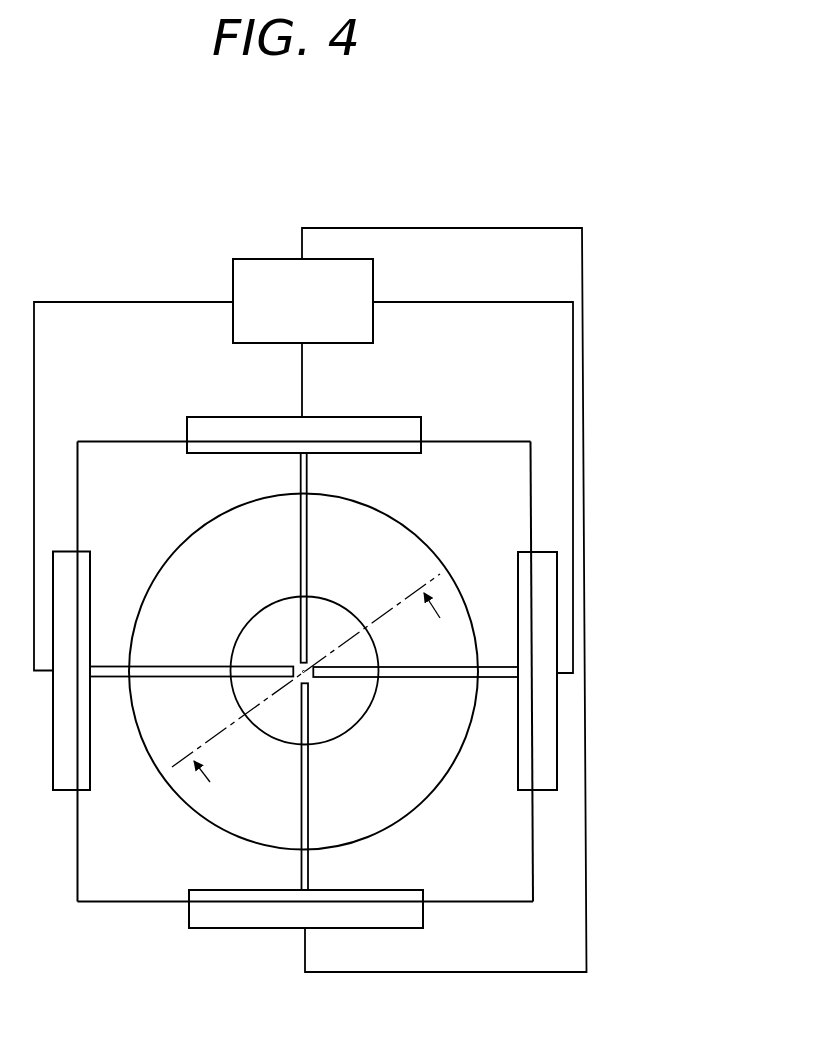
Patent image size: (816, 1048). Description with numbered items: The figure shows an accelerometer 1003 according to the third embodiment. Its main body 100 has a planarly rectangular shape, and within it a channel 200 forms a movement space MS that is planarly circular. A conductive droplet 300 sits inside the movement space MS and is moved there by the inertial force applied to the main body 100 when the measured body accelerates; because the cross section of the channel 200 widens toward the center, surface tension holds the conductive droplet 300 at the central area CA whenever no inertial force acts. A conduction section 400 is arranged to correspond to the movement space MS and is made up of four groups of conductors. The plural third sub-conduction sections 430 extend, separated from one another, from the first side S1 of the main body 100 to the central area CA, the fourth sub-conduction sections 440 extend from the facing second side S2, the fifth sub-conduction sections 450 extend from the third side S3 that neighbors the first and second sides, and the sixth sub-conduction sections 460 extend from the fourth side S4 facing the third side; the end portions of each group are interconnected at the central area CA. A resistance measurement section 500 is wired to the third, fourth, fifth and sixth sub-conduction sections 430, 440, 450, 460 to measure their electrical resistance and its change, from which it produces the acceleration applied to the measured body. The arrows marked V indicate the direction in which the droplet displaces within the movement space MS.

The accelerometer 1003 is at (323, 202).
The resistance measurement section 500 is at (262, 259).
The main body 100 is at (485, 880).
The channel 200 is at (203, 536).
The conductive droplet 300 is at (348, 615).
The conduction section 400 is at (492, 660).
The third sub-conduction section 430 is at (449, 668).
The fourth sub-conduction section 440 is at (183, 666).
The fifth sub-conduction section 450 is at (300, 858).
The sixth sub-conduction section 460 is at (305, 488).
The first side S1 is at (533, 863).
The second side S2 is at (77, 862).
The third side S3 is at (450, 905).
The fourth side S4 is at (102, 441).
The movement space MS is at (187, 778).
The central area CA is at (290, 682).
The vibration direction V is at (320, 699).